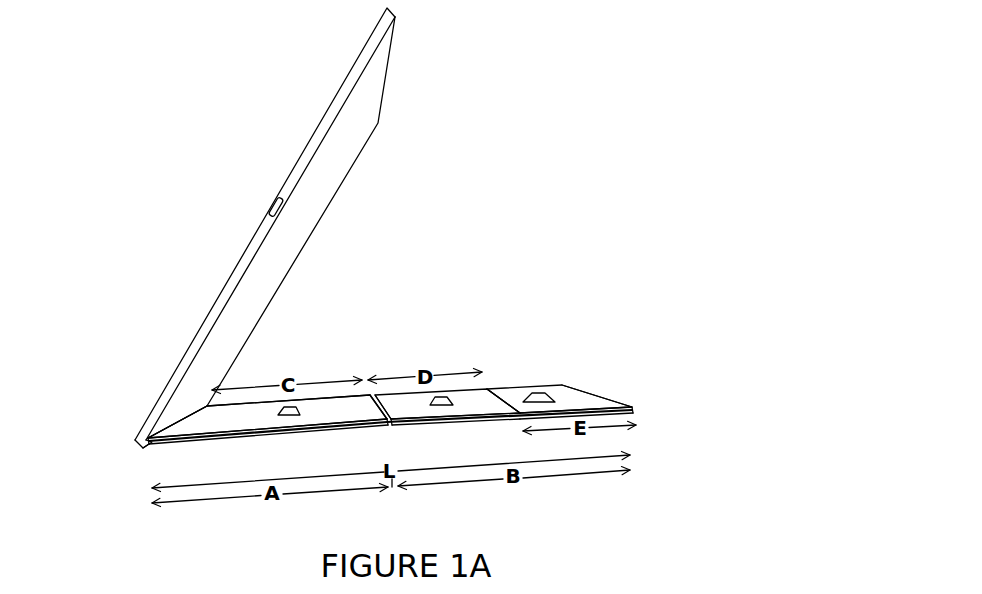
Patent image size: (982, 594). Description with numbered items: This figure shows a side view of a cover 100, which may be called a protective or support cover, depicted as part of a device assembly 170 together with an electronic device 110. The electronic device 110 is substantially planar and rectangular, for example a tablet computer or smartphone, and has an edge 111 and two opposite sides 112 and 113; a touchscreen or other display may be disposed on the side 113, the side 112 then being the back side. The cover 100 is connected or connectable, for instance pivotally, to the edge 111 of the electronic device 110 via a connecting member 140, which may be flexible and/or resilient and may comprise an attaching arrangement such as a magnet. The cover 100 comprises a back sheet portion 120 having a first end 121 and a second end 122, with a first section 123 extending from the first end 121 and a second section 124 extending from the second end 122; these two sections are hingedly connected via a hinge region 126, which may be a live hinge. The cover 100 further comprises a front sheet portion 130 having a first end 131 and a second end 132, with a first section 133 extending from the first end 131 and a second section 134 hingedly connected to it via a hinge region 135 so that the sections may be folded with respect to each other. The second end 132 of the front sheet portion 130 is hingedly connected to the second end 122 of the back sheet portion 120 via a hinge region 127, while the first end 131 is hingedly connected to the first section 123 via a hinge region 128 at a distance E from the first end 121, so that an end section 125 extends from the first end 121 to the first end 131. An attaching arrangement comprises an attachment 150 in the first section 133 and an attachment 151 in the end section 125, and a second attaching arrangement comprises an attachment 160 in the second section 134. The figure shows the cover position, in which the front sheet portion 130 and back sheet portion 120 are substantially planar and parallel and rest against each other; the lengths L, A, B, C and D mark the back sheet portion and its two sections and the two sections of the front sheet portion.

The cover 100 is at (455, 294).
The electronic device 110 is at (216, 306).
The edge 111 is at (137, 440).
The side 112 is at (348, 158).
The side 113 is at (320, 120).
The device assembly 170 is at (264, 140).
The back sheet portion 120 is at (287, 433).
The first end 121 is at (577, 390).
The second end 122 is at (148, 450).
The first section 123 is at (460, 425).
The second section 124 is at (218, 437).
The end section 125 is at (508, 390).
The hinge region 126 is at (389, 421).
The hinge region 127 is at (157, 441).
The hinge region 128 is at (513, 418).
The front sheet portion 130 is at (342, 402).
The first end 131 is at (486, 389).
The second end 132 is at (195, 407).
The first section 133 is at (465, 392).
The second section 134 is at (244, 406).
The hinge region 135 is at (377, 393).
The connecting member 140 is at (142, 452).
The attachment 150 is at (440, 398).
The attachment 151 is at (538, 394).
The attachment 160 is at (292, 408).